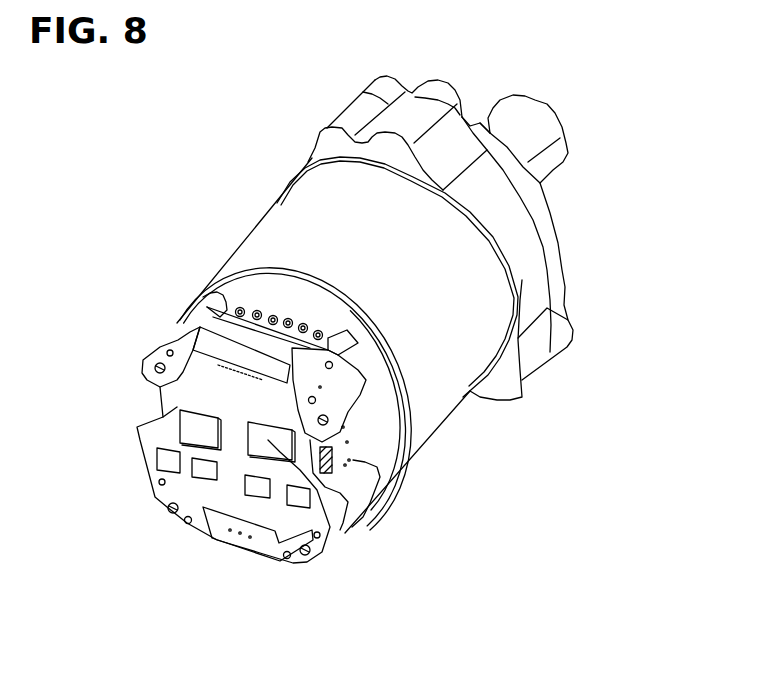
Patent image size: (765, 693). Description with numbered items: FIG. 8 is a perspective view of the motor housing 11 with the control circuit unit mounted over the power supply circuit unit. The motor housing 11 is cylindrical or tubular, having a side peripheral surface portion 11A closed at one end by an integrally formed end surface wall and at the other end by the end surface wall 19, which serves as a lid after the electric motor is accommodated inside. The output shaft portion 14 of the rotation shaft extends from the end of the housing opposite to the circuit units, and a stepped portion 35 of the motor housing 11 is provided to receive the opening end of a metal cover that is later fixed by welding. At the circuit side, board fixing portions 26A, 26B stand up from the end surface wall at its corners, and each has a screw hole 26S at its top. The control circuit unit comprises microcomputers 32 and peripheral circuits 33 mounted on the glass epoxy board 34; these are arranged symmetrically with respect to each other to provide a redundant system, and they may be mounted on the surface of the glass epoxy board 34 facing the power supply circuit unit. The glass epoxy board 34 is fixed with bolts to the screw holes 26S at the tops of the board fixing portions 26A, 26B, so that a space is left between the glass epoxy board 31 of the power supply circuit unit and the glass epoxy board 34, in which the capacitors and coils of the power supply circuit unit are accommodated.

The motor housing 11 is at (367, 345).
The side peripheral surface portion 11A is at (237, 238).
The output shaft portion 14 is at (471, 133).
The end surface wall 19 is at (459, 258).
The stepped portion 35 is at (303, 286).
The glass epoxy board 31 is at (315, 474).
The microcomputers 32 is at (231, 500).
The peripheral circuits 33 is at (195, 542).
The glass epoxy board 34 is at (252, 560).
The board fixing portion 26A is at (287, 345).
The board fixing portion 26B is at (389, 513).
The screw hole 26S is at (229, 464).